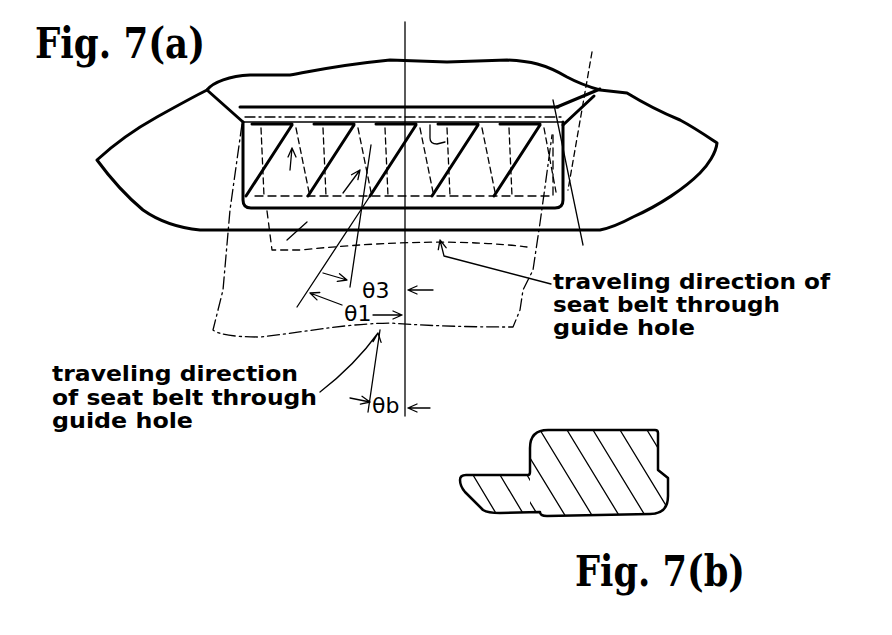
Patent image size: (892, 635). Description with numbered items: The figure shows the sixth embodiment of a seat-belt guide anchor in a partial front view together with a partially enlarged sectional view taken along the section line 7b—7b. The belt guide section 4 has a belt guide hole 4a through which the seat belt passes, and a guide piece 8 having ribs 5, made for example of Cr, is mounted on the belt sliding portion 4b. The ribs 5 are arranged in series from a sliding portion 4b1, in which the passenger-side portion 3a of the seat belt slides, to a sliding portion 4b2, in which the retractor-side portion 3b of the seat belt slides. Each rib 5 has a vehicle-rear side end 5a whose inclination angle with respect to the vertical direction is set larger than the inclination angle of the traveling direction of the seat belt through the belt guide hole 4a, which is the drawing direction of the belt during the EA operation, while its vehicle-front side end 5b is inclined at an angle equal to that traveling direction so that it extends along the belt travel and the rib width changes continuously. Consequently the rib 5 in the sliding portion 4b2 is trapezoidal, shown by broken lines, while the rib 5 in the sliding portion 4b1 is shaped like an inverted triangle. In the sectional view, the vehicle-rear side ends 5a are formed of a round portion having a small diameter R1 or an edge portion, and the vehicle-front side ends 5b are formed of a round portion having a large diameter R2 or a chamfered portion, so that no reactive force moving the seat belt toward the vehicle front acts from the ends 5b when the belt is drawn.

In FIG. 7A, the passenger-side portion of the seat belt 3a is at (230, 290).
In FIG. 7A, the retractor-side portion of the seat belt 3b is at (578, 238).
In FIG. 7A, the belt guide section 4 is at (650, 137).
In FIG. 7A, the belt guide hole 4a is at (413, 120).
In FIG. 7A, the sliding portion 4b is at (489, 234).
In FIG. 7B, the sliding portion 4b is at (540, 503).
In FIG. 7A, the sliding portion 4b1 is at (287, 240).
In FIG. 7A, the sliding portion 4b2 is at (135, 270).
In FIG. 7A, the rib 5 is at (395, 132).
In FIG. 7B, the rib 5 is at (618, 428).
In FIG. 7A, the vehicle-rear side end of the rib 5a is at (547, 187).
In FIG. 7B, the vehicle-rear side end of the rib 5a is at (660, 457).
In FIG. 7A, the vehicle-front side end of the rib 5b is at (433, 158).
In FIG. 7B, the vehicle-front side end of the rib 5b is at (528, 462).
In FIG. 7A, the section line 7b— 7b is at (318, 170).
In FIG. 7A, the guide piece 8 is at (578, 197).
In FIG. 7B, the small diameter R1 is at (661, 419).
In FIG. 7B, the large diameter R2 is at (538, 420).